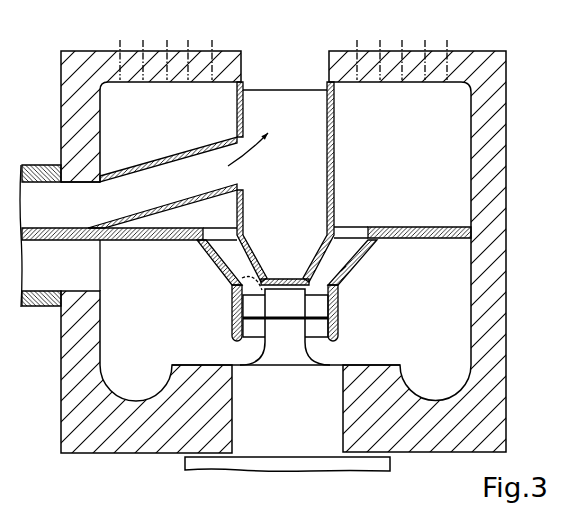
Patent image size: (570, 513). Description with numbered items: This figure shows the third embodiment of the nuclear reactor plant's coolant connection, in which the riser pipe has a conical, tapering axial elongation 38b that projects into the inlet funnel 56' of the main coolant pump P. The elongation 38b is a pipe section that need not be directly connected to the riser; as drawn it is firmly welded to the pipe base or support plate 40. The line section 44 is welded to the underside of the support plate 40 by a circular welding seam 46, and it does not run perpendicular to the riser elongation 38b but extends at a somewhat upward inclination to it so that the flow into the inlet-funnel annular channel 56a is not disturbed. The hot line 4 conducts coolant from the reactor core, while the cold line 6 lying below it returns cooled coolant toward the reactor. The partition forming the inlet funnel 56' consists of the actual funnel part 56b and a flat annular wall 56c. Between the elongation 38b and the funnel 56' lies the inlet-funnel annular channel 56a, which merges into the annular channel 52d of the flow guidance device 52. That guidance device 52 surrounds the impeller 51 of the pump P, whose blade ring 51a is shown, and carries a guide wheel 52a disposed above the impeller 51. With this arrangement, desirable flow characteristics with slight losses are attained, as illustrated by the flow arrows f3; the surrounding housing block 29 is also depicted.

The housing / valve body block 29 is at (375, 418).
The pipe base or support plate 40 is at (368, 58).
The hot line 4 is at (120, 197).
The cold line 6 is at (118, 268).
The line section 44 is at (143, 164).
The circular welding seam 46 is at (287, 92).
The conical tapering axial elongation of the riser pipe 38b is at (334, 146).
The flat annular wall 56c is at (413, 239).
The inlet funnel (partition) 56' is at (304, 217).
The funnel part 56b is at (364, 256).
The inlet-funnel annular channel 56a is at (346, 266).
The annular channel of the guidance device 52d is at (232, 284).
The flow guidance device 52 is at (339, 330).
The impeller 51 is at (285, 297).
The blade ring 51a is at (323, 303).
The guide wheel 52a is at (248, 327).
The flow arrows f3 is at (167, 93).
The main coolant pump P is at (318, 330).